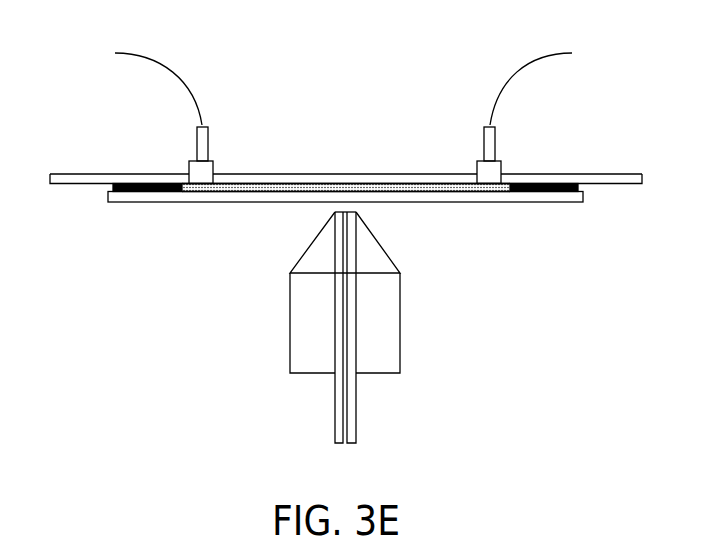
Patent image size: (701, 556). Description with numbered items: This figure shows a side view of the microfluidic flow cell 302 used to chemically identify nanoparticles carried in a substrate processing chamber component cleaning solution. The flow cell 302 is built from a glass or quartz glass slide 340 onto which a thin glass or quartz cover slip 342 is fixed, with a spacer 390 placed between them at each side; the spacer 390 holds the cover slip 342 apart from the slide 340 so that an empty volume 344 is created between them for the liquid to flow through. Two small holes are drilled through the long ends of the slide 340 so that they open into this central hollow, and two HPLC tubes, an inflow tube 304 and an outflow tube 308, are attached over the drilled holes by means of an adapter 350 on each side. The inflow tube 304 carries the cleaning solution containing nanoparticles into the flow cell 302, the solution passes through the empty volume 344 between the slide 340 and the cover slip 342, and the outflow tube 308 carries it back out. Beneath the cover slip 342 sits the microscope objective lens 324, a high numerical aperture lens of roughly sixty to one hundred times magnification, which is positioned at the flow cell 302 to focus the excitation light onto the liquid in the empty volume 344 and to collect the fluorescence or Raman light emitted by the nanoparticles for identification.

The microfluidic flow cell 302 is at (353, 131).
The inflow tube 304 is at (181, 78).
The outflow tube 308 is at (508, 78).
The microscope objective lens 324 is at (402, 323).
The glass slide 340 is at (315, 174).
The cover slip 342 is at (492, 203).
The empty volume 344 is at (430, 188).
The adapter 350 is at (208, 137).
The spacer 390 is at (112, 190).